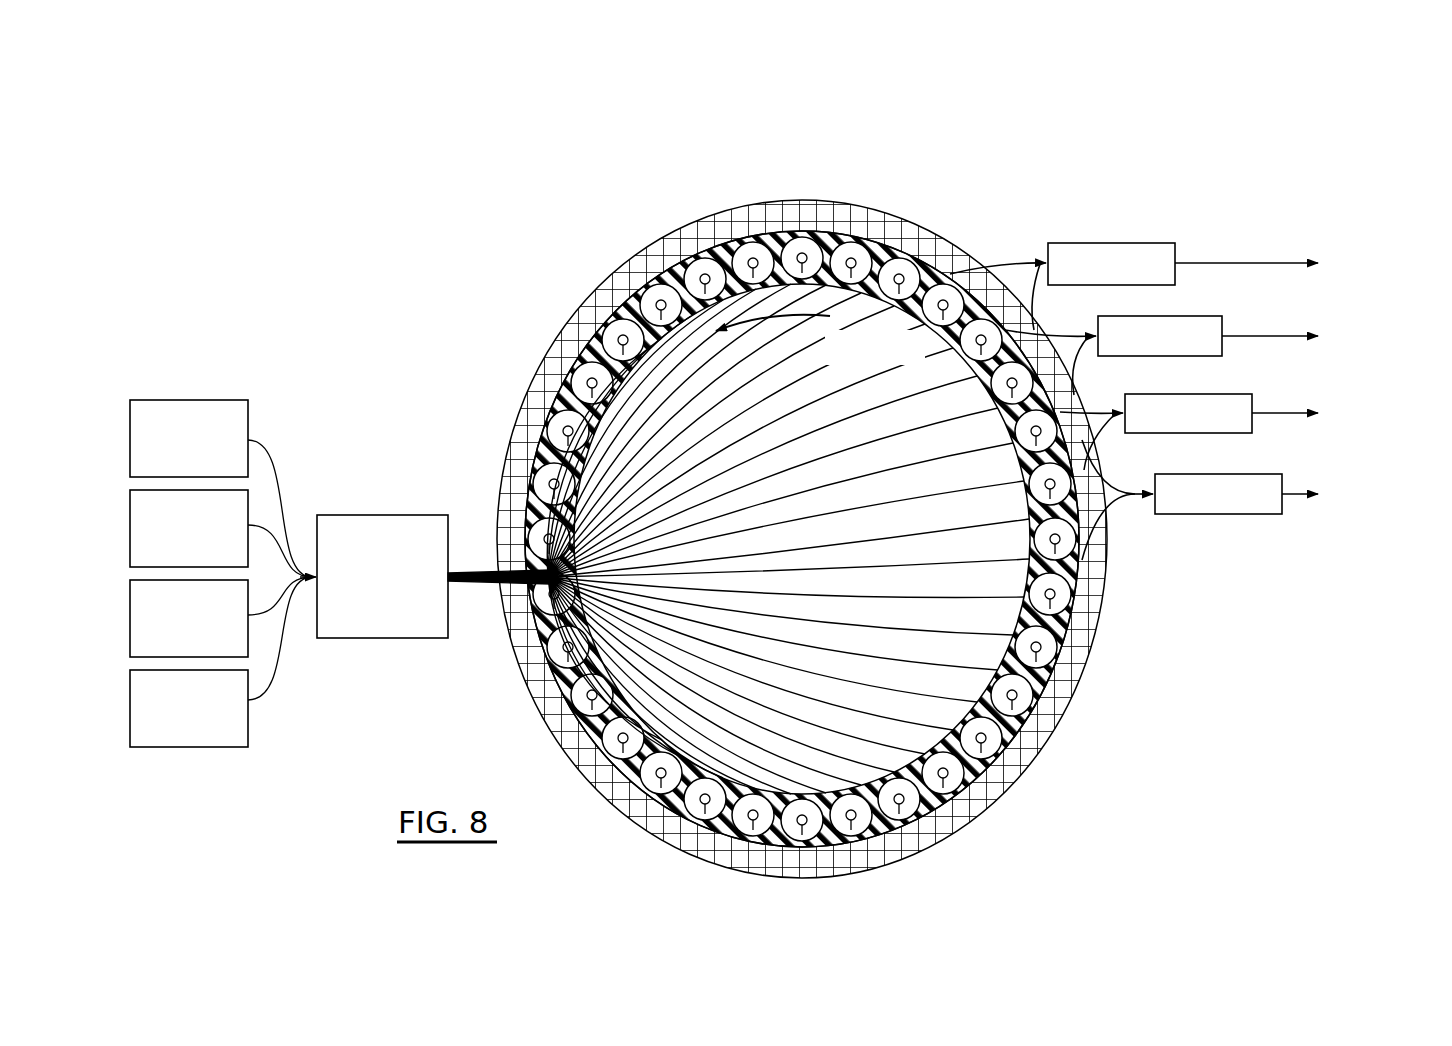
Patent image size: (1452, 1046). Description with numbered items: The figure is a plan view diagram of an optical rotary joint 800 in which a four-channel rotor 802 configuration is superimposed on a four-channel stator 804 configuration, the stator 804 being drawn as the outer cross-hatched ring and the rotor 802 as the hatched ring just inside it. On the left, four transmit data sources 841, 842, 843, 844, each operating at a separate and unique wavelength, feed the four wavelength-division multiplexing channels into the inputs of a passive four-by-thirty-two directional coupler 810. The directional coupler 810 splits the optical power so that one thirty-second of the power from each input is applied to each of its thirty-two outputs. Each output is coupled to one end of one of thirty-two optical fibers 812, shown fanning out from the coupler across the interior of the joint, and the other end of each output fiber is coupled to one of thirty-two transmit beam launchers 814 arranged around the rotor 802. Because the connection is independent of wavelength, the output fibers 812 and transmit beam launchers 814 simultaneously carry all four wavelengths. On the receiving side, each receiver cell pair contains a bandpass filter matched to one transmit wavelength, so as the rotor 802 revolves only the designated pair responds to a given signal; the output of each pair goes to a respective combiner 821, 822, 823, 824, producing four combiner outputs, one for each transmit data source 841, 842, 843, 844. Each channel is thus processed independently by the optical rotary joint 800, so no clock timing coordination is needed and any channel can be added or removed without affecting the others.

The optical rotary joint 800 is at (1036, 138).
The rotor 802 is at (880, 245).
The stator 804 is at (798, 194).
The directional coupler 810 is at (347, 515).
The optical fibers 812 is at (492, 565).
The transmit beam launchers 814 is at (1033, 645).
The combiner 821 is at (1275, 476).
The combiner 822 is at (1247, 397).
The combiner 823 is at (1225, 319).
The combiner 824 is at (1166, 245).
The transmit data source 841 is at (130, 405).
The transmit data source 842 is at (132, 508).
The transmit data source 843 is at (130, 614).
The transmit data source 844 is at (130, 700).